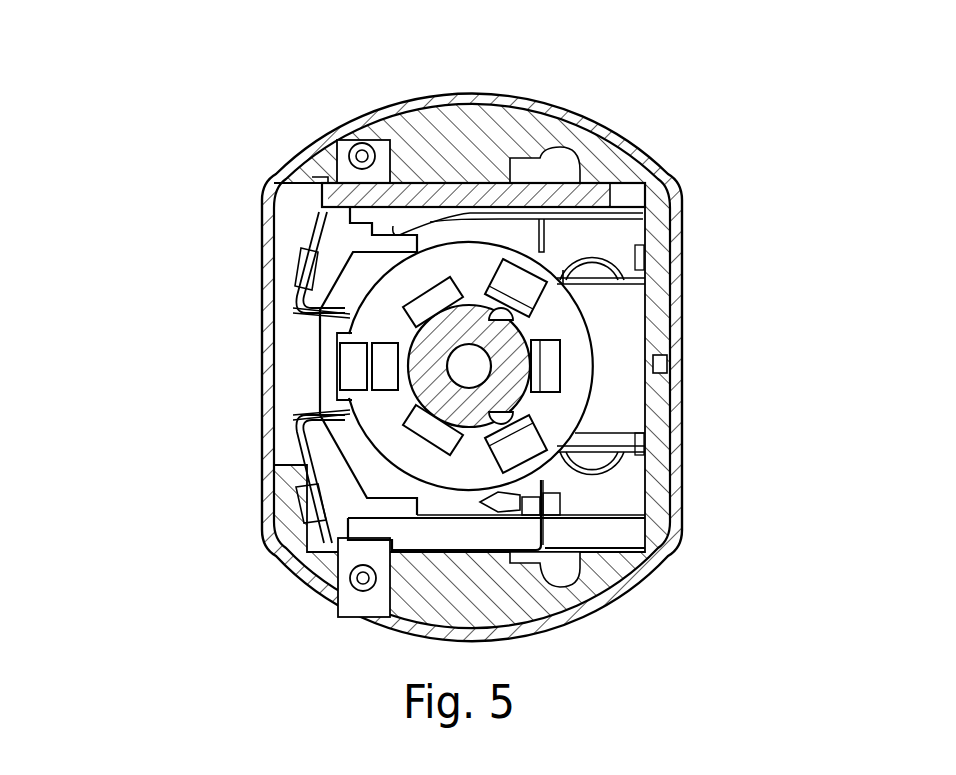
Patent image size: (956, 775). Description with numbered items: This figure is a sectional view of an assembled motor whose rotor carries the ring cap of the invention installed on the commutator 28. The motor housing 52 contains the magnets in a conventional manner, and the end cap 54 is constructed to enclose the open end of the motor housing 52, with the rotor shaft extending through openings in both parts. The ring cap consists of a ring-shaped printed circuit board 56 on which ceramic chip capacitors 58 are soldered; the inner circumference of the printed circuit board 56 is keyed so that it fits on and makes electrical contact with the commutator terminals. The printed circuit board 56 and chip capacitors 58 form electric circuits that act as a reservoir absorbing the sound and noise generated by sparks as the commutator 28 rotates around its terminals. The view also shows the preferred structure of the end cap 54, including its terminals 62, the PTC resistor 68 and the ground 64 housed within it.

The commutator 28 is at (432, 336).
The motor housing 52 is at (682, 321).
The end cap 54 is at (458, 130).
The printed circuit board 56 is at (580, 388).
The chip capacitors 58 is at (540, 272).
The terminals 62 is at (265, 440).
The ground 64 is at (363, 590).
The PTC resistor 68 is at (577, 198).